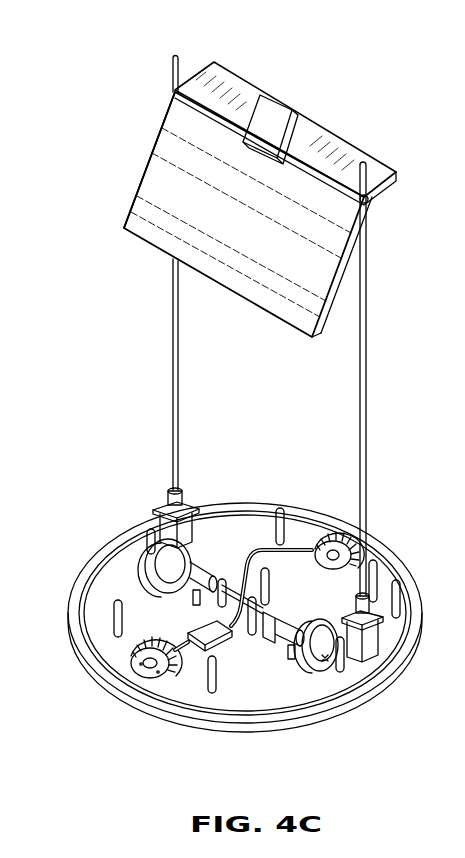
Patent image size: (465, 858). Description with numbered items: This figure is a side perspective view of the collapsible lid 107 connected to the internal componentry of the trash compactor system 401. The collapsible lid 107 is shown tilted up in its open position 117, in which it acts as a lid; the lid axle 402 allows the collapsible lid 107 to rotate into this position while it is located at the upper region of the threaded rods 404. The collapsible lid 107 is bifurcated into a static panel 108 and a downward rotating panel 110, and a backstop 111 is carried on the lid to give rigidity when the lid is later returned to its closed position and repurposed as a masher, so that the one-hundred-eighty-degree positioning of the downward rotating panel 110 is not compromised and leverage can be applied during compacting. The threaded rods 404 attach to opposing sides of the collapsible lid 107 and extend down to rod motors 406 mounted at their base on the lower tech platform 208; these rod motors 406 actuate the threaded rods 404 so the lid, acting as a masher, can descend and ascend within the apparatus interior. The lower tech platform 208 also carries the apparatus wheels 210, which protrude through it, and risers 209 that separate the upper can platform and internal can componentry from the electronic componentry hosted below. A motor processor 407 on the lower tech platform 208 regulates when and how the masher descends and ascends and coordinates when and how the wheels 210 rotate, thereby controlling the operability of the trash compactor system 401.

The trash compactor system 401 is at (72, 56).
The static panel 108 is at (211, 72).
The backstop 111 is at (272, 118).
The collapsible lid 107 is at (164, 112).
The open position 117 is at (160, 156).
The downward rotating panel 110 is at (150, 197).
The lid axle 402 is at (366, 201).
The threaded rods 404 is at (173, 356).
The rod motors 406 is at (158, 521).
The lower tech platform 208 is at (95, 616).
The apparatus wheels 210 is at (142, 672).
The risers 209 is at (212, 692).
The motor processor 407 is at (242, 643).